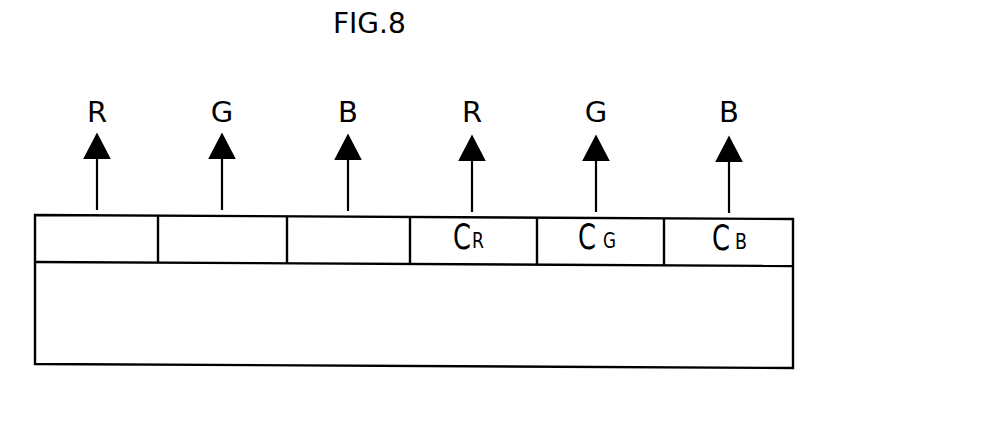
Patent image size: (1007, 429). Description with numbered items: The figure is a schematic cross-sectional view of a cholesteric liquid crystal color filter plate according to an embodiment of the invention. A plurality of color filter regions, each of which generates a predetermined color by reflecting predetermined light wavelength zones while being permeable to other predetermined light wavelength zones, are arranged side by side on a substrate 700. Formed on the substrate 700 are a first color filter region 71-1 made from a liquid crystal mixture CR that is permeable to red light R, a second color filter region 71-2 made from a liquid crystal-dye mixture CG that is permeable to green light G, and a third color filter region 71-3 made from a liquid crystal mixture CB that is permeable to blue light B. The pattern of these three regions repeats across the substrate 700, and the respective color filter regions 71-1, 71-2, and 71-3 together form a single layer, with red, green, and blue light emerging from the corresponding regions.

The first color filter region 71-1 is at (100, 253).
The second color filter region 71-2 is at (229, 253).
The third color filter region 71-3 is at (356, 253).
The substrate 700 is at (773, 318).